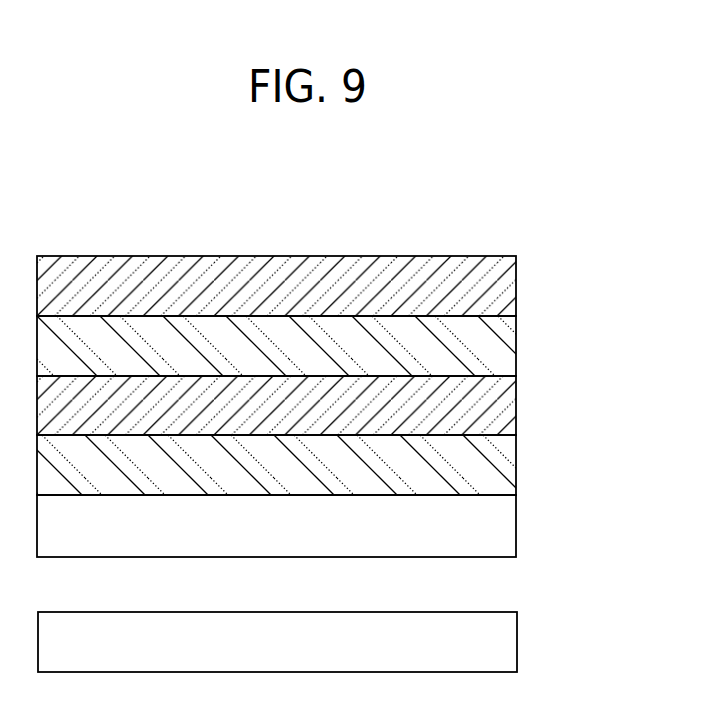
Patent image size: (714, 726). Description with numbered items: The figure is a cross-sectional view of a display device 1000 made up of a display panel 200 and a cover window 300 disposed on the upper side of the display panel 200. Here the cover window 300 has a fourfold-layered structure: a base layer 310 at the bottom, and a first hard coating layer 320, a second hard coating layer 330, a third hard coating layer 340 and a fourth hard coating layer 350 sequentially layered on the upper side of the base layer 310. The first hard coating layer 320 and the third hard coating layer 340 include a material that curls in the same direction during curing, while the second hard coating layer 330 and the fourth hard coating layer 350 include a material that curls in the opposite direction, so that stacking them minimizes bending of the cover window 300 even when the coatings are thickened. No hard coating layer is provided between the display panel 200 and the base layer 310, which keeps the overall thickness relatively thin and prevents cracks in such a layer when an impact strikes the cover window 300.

The display device 1000 is at (322, 202).
The display panel 200 is at (495, 645).
The cover window 300 is at (584, 273).
The base layer 310 is at (494, 524).
The first hard coating layer 320 is at (494, 465).
The second hard coating layer 330 is at (493, 410).
The third hard coating layer 340 is at (492, 348).
The fourth hard coating layer 350 is at (495, 289).